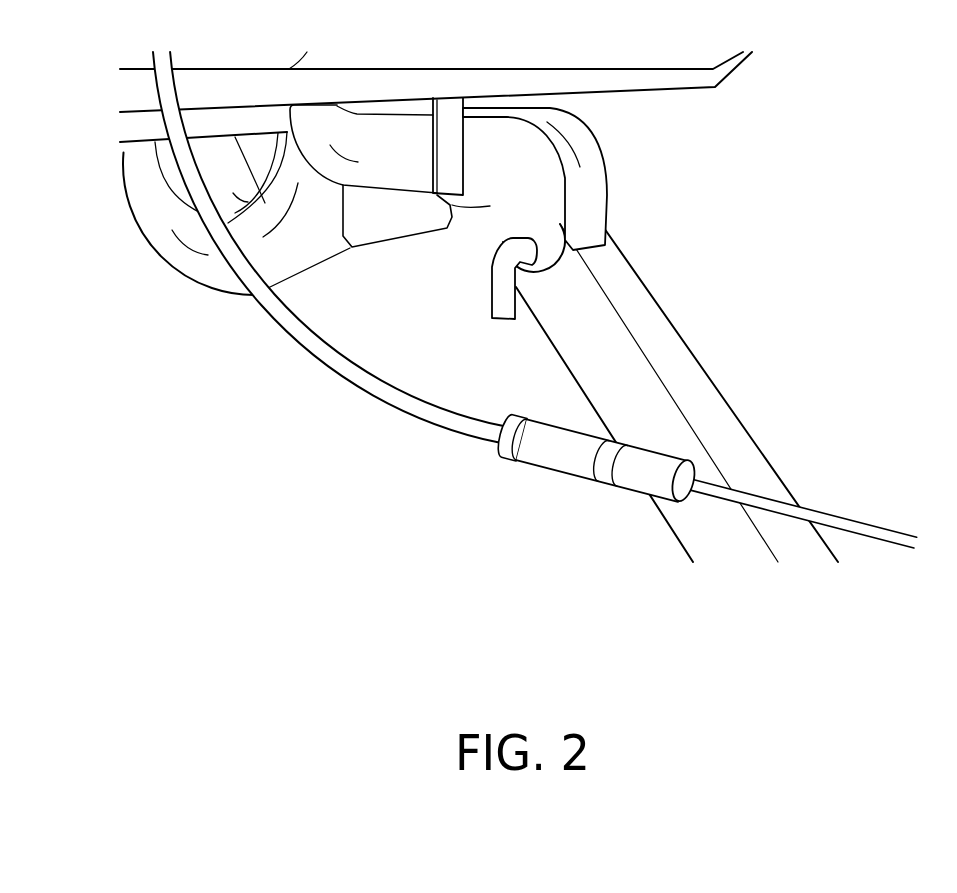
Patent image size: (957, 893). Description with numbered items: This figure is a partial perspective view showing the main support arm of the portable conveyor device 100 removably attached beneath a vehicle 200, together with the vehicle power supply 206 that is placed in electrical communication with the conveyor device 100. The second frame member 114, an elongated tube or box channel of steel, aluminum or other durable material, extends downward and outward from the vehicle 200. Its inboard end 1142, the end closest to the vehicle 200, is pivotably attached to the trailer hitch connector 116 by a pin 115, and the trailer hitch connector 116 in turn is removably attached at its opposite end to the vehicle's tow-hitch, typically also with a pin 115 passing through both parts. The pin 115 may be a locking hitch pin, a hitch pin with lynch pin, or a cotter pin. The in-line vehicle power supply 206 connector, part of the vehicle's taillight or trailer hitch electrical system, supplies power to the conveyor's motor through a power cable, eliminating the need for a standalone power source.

The vehicle 200 is at (722, 82).
The portable conveyor device 100 is at (660, 335).
The inboard end 1142 is at (634, 268).
The trailer hitch connector 116 is at (605, 203).
The pin 115 is at (497, 305).
The second frame member 114 is at (741, 446).
The vehicle power supply 206 is at (533, 453).